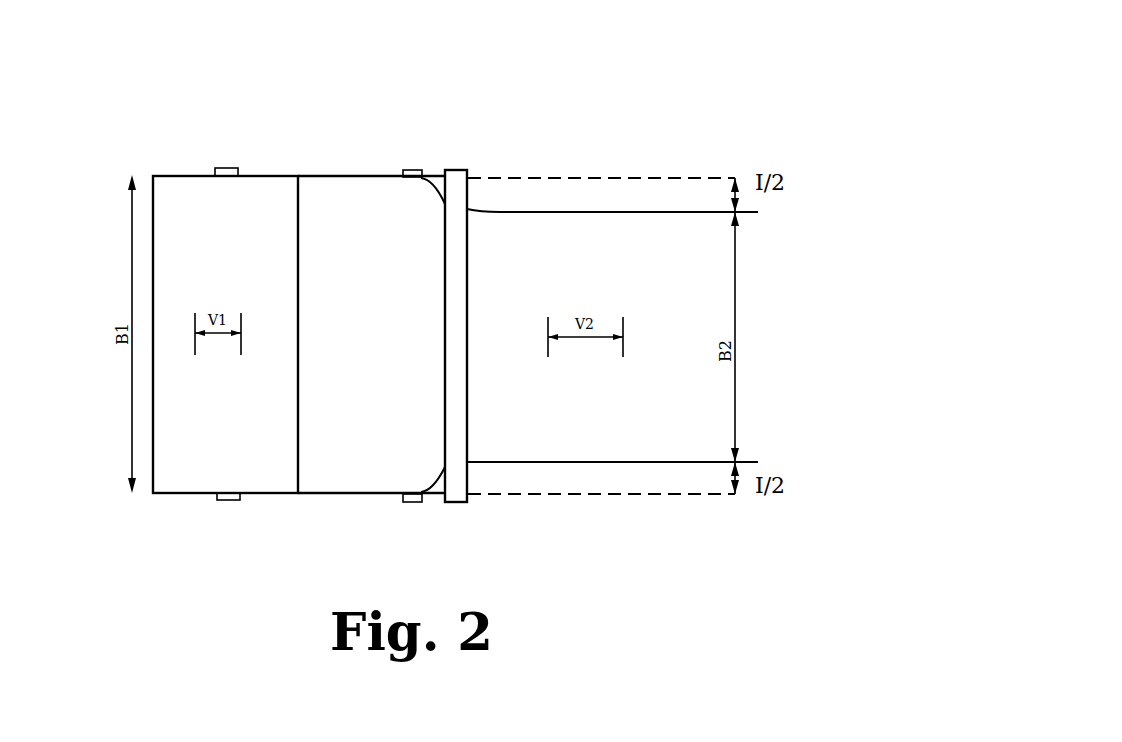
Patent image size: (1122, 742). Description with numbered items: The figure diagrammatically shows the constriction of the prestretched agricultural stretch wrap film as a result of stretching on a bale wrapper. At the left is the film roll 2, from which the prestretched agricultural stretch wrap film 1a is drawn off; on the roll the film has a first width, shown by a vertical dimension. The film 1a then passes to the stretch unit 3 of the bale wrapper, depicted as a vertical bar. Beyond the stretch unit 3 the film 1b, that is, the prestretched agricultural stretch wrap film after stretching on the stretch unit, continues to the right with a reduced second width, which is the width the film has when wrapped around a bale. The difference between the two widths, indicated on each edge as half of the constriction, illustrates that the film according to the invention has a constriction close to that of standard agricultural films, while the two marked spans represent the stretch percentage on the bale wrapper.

The film roll 2 is at (153, 134).
The stretch unit of the bale wrapper 3 is at (488, 134).
The prestretched agricultural stretch wrap film 1a is at (358, 211).
The prestretched agricultural stretch wrap film after stretching 1b is at (648, 243).